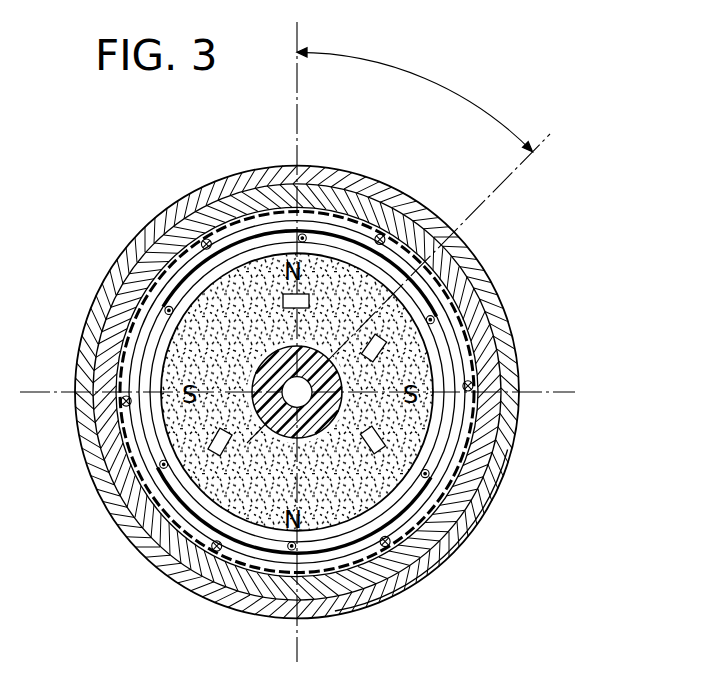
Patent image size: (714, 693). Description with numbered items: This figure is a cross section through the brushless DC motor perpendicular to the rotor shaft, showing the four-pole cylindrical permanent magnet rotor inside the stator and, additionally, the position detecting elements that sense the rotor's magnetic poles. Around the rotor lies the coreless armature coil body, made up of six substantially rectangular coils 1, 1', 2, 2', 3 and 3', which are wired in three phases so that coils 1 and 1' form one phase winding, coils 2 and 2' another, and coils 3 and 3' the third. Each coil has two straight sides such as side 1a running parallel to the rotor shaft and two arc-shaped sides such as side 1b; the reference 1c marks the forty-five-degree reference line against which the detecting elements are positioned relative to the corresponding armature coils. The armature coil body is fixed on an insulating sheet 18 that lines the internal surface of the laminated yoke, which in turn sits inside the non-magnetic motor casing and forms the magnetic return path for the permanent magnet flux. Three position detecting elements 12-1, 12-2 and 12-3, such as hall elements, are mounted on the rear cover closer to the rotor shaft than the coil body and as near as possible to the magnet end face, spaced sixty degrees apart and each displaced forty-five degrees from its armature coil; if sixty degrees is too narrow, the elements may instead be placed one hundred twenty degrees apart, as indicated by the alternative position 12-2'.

The armature coil 1 is at (305, 248).
The armature coil 1' is at (260, 515).
The coil side 1a is at (466, 383).
The coil side 1b is at (309, 236).
The 45 degree reference line 1c is at (500, 186).
The armature coil 2 is at (311, 392).
The armature coil 2' is at (240, 392).
The armature coil 3 is at (297, 418).
The armature coil 3' is at (297, 357).
The insulating sheet 18 is at (455, 296).
The position detecting element 12-1 is at (310, 301).
The position detecting element 12-2 is at (400, 358).
The position detecting element 12-2' is at (254, 455).
The position detecting element 12-3 is at (365, 455).